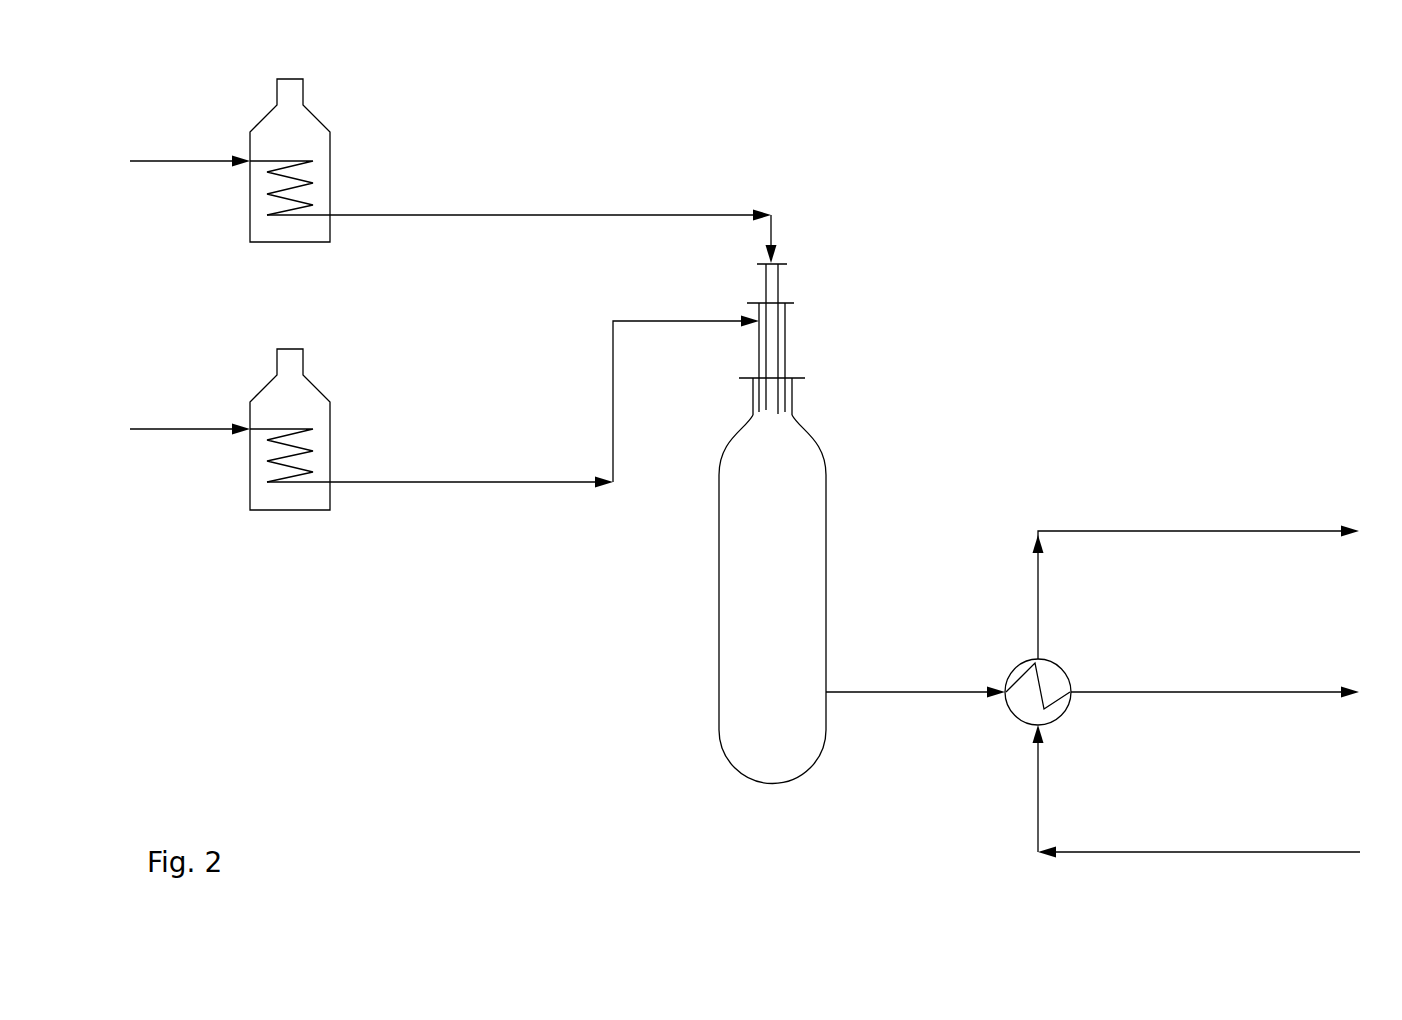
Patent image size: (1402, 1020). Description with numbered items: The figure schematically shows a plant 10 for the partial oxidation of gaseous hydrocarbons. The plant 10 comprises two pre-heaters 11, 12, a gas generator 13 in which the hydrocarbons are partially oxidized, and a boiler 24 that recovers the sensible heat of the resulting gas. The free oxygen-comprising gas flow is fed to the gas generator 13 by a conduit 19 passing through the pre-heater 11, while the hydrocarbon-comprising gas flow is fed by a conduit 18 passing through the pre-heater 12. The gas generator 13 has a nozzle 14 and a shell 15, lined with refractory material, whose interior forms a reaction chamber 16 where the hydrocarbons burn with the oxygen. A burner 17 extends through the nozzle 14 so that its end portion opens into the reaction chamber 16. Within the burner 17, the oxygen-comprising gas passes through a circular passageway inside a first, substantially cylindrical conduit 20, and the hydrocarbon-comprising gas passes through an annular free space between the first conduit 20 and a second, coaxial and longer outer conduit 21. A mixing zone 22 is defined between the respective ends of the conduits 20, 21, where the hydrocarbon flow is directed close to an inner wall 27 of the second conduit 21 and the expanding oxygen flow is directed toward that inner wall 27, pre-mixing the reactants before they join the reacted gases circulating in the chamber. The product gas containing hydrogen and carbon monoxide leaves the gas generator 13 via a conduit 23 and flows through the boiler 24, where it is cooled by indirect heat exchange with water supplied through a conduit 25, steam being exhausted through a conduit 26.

The plant 10 is at (604, 765).
The pre-heater 11 is at (330, 190).
The pre-heater 12 is at (330, 463).
The gas generator 13 is at (688, 589).
The nozzle 14 is at (792, 395).
The shell 15 is at (830, 553).
The reaction chamber 16 is at (760, 656).
The burner 17 is at (796, 354).
The conduit 18 is at (180, 429).
The conduit 19 is at (180, 161).
The first conduit 20 is at (778, 280).
The second conduit 21 is at (785, 337).
The mixing zone 22 is at (765, 412).
The conduit 23 is at (912, 692).
The boiler 24 is at (1064, 714).
The conduit 25 is at (1225, 852).
The conduit 26 is at (1225, 531).
The inner wall 27 is at (788, 420).